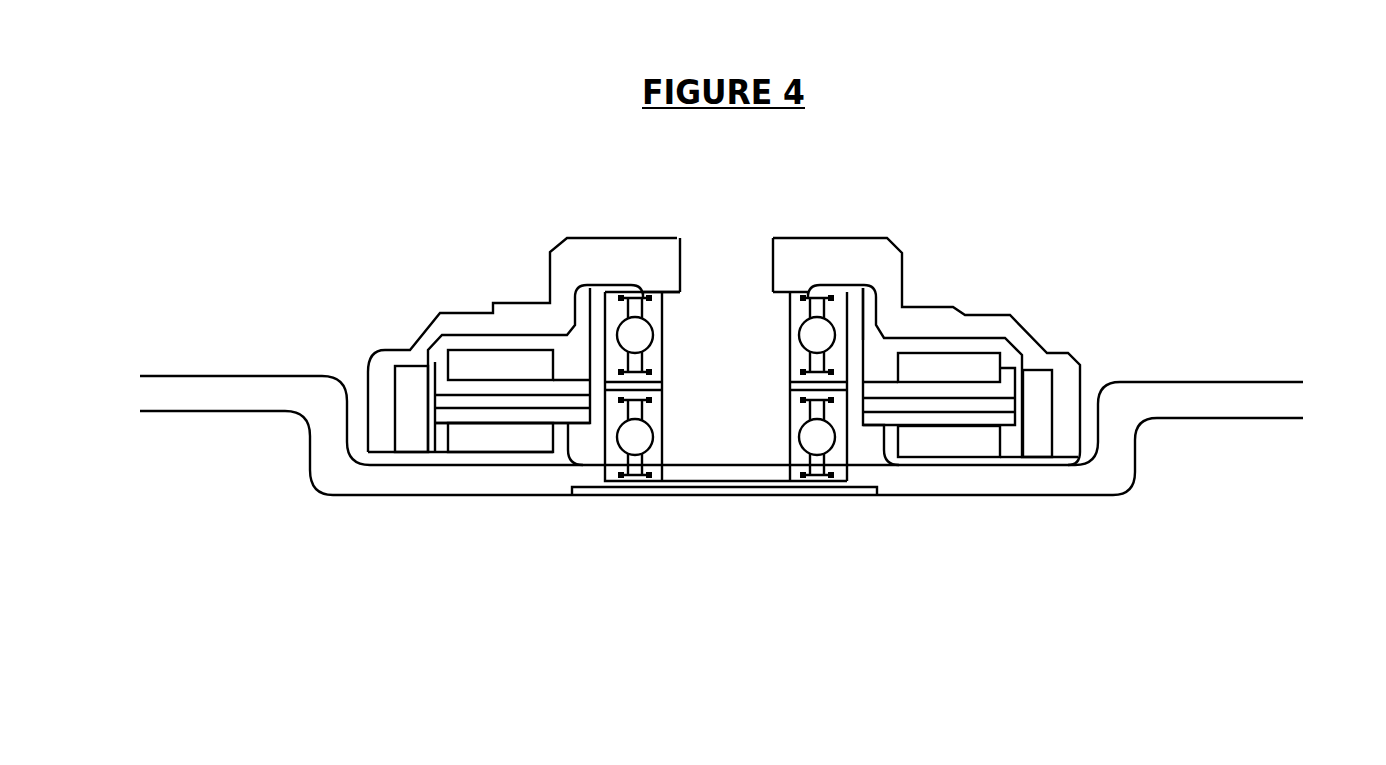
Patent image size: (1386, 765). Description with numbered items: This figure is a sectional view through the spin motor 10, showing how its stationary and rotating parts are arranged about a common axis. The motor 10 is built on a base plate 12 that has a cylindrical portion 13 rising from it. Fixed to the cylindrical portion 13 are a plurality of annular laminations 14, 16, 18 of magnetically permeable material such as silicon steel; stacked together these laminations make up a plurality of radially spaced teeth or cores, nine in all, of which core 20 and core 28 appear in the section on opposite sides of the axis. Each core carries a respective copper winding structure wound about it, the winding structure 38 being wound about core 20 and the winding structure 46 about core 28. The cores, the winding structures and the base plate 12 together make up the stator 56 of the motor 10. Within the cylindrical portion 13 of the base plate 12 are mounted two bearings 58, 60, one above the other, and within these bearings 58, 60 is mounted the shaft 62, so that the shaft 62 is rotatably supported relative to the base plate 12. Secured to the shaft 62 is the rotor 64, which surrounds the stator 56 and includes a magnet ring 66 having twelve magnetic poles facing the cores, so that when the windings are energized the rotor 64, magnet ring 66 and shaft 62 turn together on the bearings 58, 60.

The spin motor 10 is at (498, 208).
The base plate 12 is at (1290, 402).
The cylindrical portion 13 is at (856, 315).
The annular lamination 14 is at (435, 370).
The annular lamination 16 is at (438, 401).
The annular lamination 18 is at (438, 418).
The core 20 is at (497, 407).
The core 28 is at (932, 405).
The copper winding structure 38 is at (462, 356).
The copper winding structure 46 is at (955, 440).
The stator 56 is at (472, 328).
The bearing 58 is at (648, 470).
The bearing 60 is at (798, 300).
The shaft 62 is at (713, 392).
The rotor 64 is at (904, 249).
The magnet ring 66 is at (1040, 390).